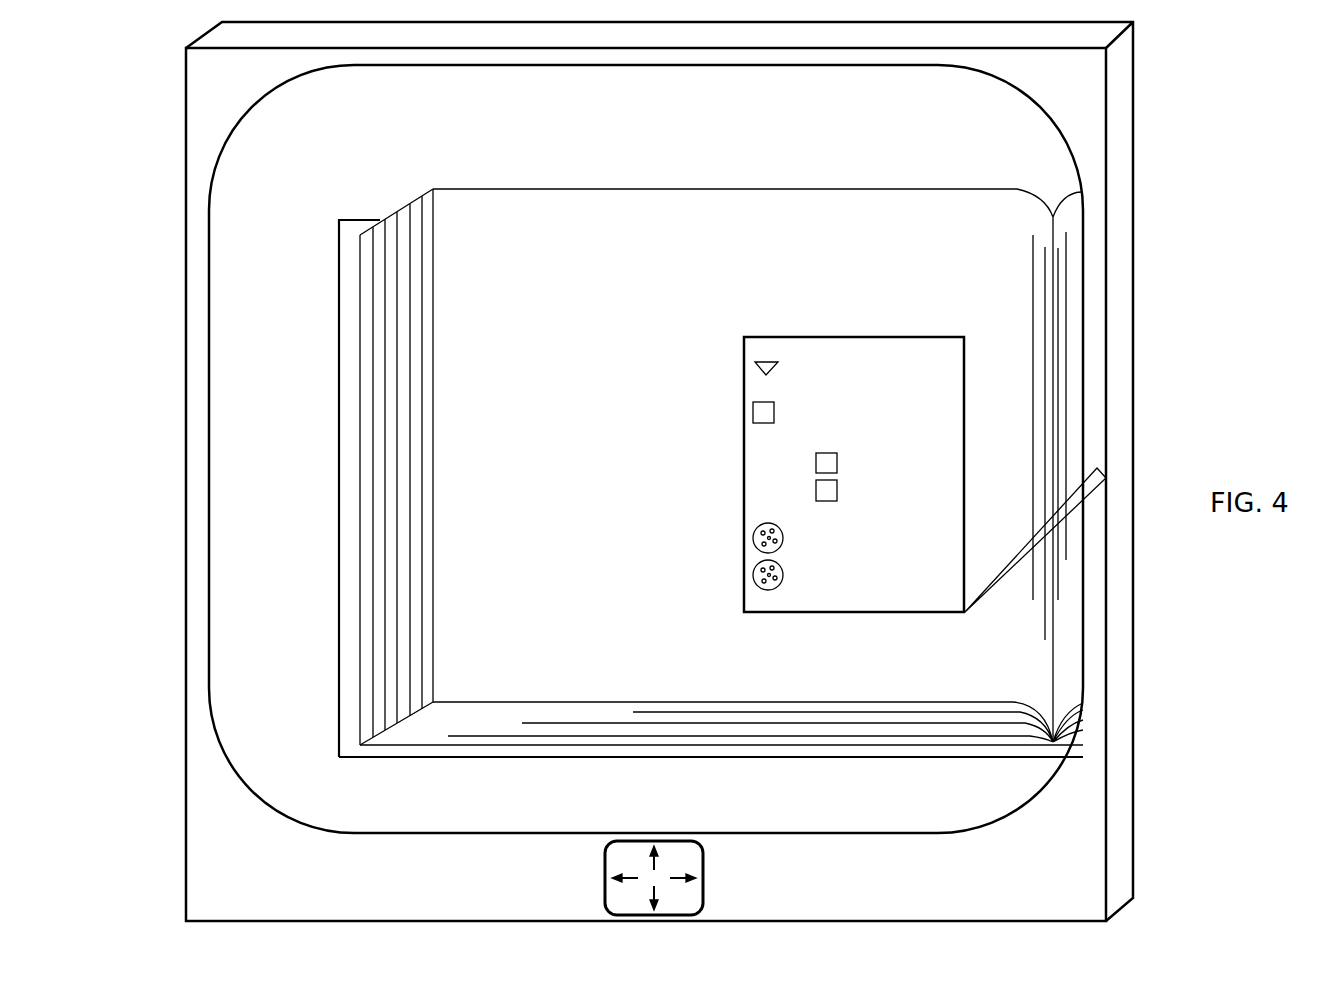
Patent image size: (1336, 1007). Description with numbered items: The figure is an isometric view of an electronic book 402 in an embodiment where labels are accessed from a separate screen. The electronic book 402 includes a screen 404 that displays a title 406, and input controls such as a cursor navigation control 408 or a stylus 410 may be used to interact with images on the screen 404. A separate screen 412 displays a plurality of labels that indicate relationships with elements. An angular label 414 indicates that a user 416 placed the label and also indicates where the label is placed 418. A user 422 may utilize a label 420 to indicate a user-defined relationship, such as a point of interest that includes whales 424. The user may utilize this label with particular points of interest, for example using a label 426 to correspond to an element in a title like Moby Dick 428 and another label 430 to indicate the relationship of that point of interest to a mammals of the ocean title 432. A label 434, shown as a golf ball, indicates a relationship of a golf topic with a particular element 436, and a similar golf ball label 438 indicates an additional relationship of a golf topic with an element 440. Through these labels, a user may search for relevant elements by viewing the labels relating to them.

The electronic book 402 is at (1133, 128).
The screen 404 is at (1005, 815).
The title 406 is at (820, 189).
The cursor navigation control 408 is at (703, 868).
The stylus 410 is at (1106, 478).
The separate screen 412 is at (898, 337).
The angular label 414 is at (757, 363).
The user 416 is at (818, 355).
The label placement location 418 is at (893, 378).
The label 420 is at (752, 415).
The user 422 is at (843, 414).
The whales point of interest 424 is at (818, 436).
The label 426 is at (815, 459).
The Moby Dick title 428 is at (933, 463).
The label 430 is at (815, 489).
The mammals of the ocean title 432 is at (933, 517).
The label 434 is at (752, 534).
The element 436 is at (843, 536).
The label 438 is at (752, 570).
The element 440 is at (848, 588).